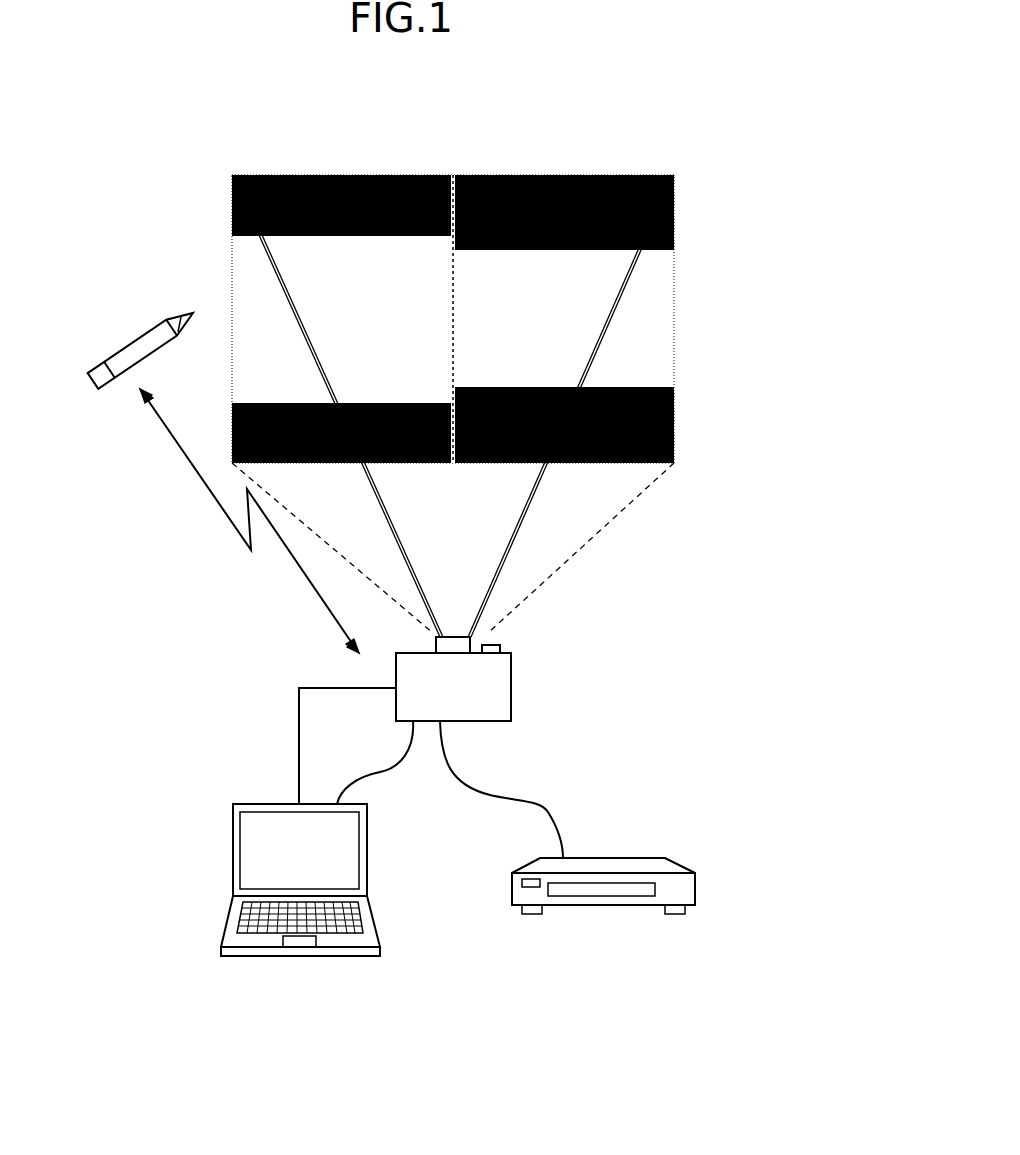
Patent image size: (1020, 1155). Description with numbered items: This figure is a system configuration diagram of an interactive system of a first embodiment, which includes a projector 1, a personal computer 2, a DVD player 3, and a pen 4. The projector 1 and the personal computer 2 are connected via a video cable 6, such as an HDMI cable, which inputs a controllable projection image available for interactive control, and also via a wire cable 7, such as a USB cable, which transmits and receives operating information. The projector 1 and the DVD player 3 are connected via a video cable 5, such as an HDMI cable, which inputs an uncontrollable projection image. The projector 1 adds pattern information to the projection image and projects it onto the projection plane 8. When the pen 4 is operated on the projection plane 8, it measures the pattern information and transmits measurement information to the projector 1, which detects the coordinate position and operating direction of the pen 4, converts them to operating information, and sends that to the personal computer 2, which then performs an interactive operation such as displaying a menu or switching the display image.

The projector 1 is at (512, 680).
The personal computer 2 is at (253, 804).
The DVD player 3 is at (628, 858).
The pen 4 is at (122, 352).
The video cable 5 is at (548, 808).
The video cable 6 is at (388, 773).
The wire cable 7 is at (299, 717).
The projection plane 8 is at (525, 148).